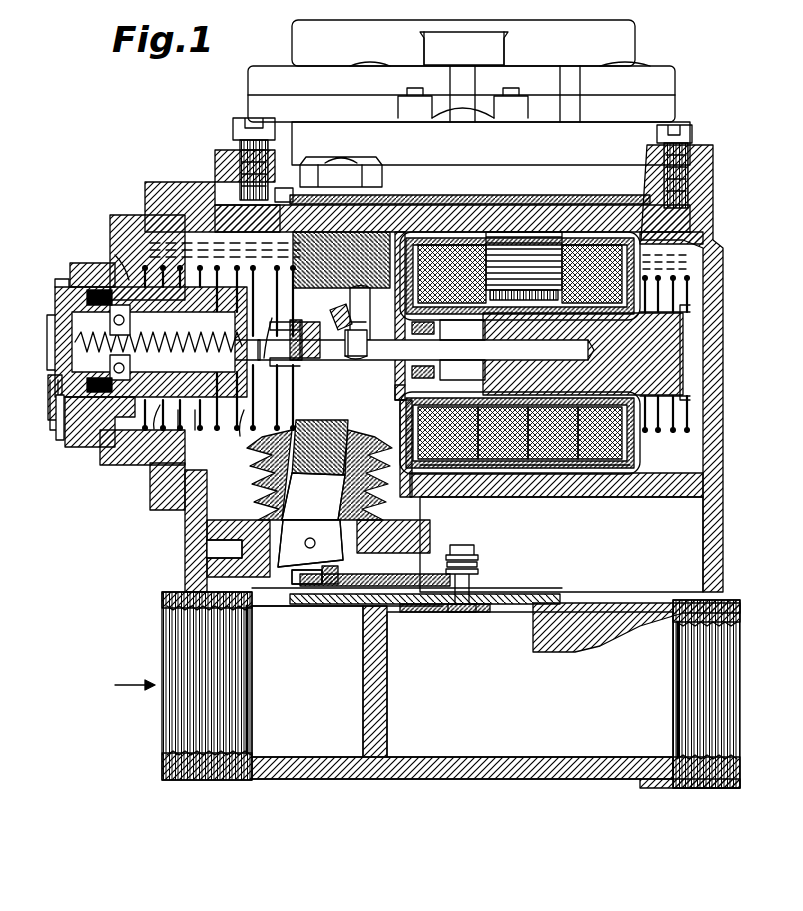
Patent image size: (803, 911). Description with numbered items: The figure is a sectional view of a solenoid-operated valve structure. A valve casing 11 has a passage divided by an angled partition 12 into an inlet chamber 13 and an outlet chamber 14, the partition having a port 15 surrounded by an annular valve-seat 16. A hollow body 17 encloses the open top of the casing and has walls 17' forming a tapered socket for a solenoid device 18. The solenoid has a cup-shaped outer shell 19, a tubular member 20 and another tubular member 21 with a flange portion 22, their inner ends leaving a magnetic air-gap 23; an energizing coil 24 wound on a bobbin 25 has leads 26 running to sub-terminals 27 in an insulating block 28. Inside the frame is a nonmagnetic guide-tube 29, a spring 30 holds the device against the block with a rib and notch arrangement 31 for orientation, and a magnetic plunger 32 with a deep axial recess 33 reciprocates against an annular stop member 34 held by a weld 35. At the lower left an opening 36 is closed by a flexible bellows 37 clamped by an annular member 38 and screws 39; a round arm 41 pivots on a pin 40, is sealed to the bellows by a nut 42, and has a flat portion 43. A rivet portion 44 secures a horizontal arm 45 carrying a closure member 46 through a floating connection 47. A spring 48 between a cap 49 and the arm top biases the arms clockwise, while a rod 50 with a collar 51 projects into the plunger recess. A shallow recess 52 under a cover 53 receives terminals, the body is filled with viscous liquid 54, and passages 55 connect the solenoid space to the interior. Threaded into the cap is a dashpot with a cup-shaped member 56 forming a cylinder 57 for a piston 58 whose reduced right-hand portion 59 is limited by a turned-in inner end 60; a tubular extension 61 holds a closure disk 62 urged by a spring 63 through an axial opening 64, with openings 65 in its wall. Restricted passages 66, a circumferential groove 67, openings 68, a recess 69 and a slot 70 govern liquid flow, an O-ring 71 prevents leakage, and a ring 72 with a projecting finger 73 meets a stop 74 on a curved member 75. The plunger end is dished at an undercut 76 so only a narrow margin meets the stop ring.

The valve casing 11 is at (542, 779).
The angled partition 12 is at (385, 712).
The inlet chamber 13 is at (310, 688).
The outlet chamber 14 is at (636, 694).
The port 15 is at (438, 622).
The annular valve-seat 16 is at (550, 626).
The hollow body 17 is at (451, 368).
The walls 17' is at (633, 354).
The solenoid device 18 is at (652, 235).
The cup-shaped outer shell 19 is at (580, 474).
The tubular member 20 is at (600, 433).
The tubular member 21 is at (448, 433).
The flange portion 22 is at (452, 274).
The magnetic air-gap 23 is at (503, 433).
The energizing coil 24 is at (523, 472).
The bobbin 25 is at (553, 433).
The leads 26 is at (358, 303).
The sub-terminals 27 is at (346, 166).
The insulating block 28 is at (282, 173).
The guide-tube 29 is at (448, 330).
The spring 30 is at (680, 408).
The rib and notch arrangement 31 is at (401, 217).
The armature or magnetic plunger 32 is at (658, 339).
The axial recess 33 is at (592, 274).
The annular stop member 34 is at (448, 370).
The weld 35 is at (395, 388).
The opening 36 is at (210, 508).
The flexible bellows 37 is at (260, 449).
The annular member 38 is at (388, 546).
The screws 39 is at (324, 587).
The pin 40 is at (340, 552).
The round arm 41 is at (323, 505).
The nut 42 is at (352, 360).
The flat portion 43 is at (334, 302).
The rivet portion 44 is at (301, 587).
The horizontal arm 45 is at (428, 579).
The closure member 46 is at (520, 590).
The floating connection 47 is at (483, 559).
The spring 48 is at (252, 303).
The cap 49 is at (140, 214).
The rod 50 is at (297, 354).
The collar 51 is at (366, 322).
The shallow recess 52 is at (489, 186).
The cover 53 is at (630, 110).
The viscous liquid 54 is at (193, 194).
The passages 55 is at (516, 270).
The cup-shaped member 56 is at (62, 315).
The cylinder 57 is at (50, 374).
The piston 58 is at (197, 426).
The right-hand portion 59 is at (252, 316).
The turned-in inner end 60 is at (212, 282).
The tubular extension 61 is at (260, 384).
The closure disk 62 is at (290, 312).
The spring 63 is at (70, 352).
The axial opening 64 is at (177, 430).
The openings 65 is at (247, 424).
The restricted passages 66 is at (120, 250).
The circumferential groove 67 is at (116, 282).
The openings 68 is at (104, 320).
The recess 69 is at (104, 367).
The slot 70 is at (150, 427).
The O-ring 71 is at (78, 282).
The ring 72 is at (62, 288).
The projecting finger 73 is at (58, 434).
The stop 74 is at (52, 408).
The curved member 75 is at (74, 440).
The undercut 76 is at (426, 350).